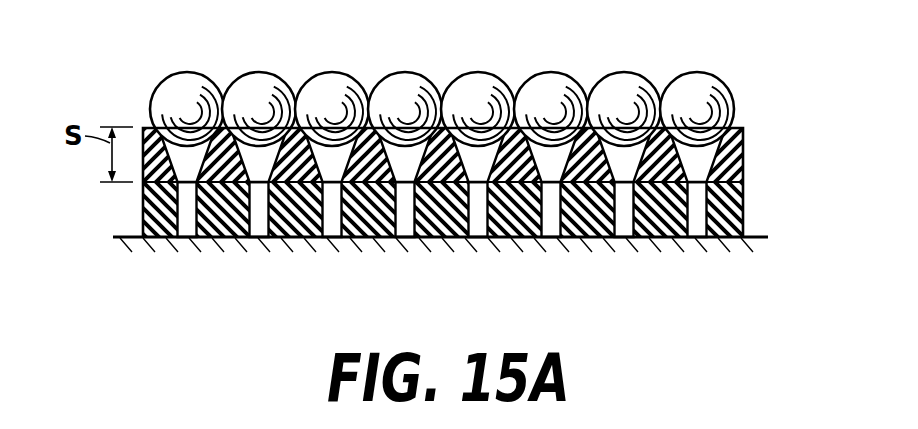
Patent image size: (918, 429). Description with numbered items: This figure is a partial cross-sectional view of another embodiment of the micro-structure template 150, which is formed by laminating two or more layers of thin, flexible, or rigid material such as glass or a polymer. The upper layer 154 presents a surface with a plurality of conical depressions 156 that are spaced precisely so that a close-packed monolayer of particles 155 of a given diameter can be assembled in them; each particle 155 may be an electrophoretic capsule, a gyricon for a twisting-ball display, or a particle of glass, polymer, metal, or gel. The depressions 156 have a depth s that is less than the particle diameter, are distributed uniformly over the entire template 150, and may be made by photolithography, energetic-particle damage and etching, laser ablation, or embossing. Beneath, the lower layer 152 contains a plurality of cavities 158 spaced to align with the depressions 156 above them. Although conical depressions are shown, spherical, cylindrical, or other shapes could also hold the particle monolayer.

The micro-structure template 150 is at (751, 89).
The layer 152 is at (730, 225).
The layer 154 is at (730, 163).
The particle 155 is at (616, 76).
The conical depression 156 is at (705, 165).
The cavity 158 is at (629, 238).